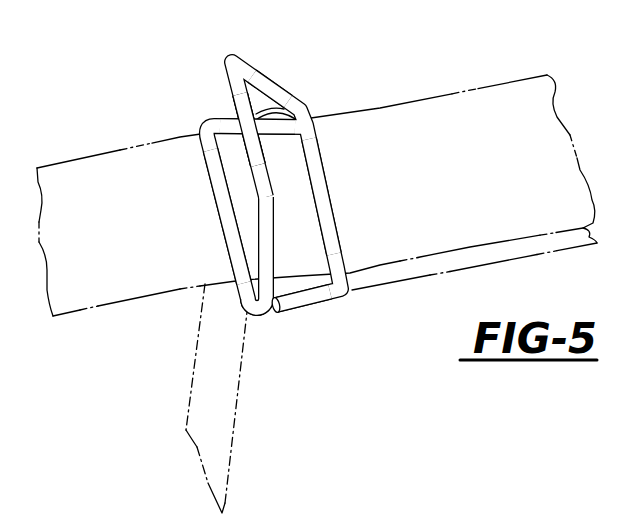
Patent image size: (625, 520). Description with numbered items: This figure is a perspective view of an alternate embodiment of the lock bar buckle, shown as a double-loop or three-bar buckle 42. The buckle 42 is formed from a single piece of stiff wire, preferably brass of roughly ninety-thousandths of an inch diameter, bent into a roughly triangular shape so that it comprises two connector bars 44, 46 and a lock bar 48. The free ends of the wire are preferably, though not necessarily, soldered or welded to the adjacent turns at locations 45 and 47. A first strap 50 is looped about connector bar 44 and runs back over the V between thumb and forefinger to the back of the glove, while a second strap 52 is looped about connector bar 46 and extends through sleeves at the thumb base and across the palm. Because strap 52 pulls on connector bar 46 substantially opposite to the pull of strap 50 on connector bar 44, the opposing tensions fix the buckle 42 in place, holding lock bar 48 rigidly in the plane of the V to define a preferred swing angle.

The three-bar buckle 42 is at (323, 308).
The connector bar 44 is at (328, 196).
The soldered or welded joint 45 is at (268, 322).
The connector bar 46 is at (198, 181).
The soldered or welded joint 47 is at (232, 106).
The lock bar 48 is at (281, 78).
The first strap 50 is at (491, 102).
The second strap 52 is at (136, 302).